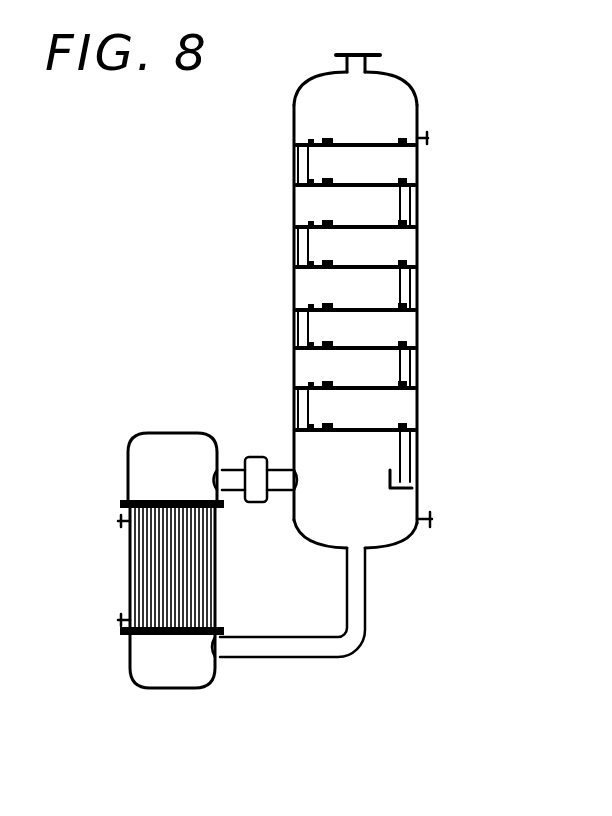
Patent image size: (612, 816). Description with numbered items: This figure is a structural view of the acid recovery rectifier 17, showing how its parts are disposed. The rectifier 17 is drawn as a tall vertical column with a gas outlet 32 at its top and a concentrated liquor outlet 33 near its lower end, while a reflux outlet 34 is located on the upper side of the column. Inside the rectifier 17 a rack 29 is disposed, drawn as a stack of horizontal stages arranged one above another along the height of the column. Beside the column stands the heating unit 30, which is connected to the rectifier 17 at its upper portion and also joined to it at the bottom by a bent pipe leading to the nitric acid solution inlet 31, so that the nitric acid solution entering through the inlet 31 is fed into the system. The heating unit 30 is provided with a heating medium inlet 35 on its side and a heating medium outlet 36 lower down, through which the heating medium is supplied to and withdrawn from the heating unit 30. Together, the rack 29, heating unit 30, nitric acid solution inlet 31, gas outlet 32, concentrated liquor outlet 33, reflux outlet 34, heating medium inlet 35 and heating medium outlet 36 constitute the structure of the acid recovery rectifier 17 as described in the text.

The acid recovery rectifier 17 is at (405, 78).
The rack 29 is at (387, 255).
The heating unit 30 is at (148, 433).
The nitric acid solution inlet 31 is at (241, 632).
The gas outlet 32 is at (356, 53).
The concentrated liquor outlet 33 is at (434, 519).
The reflux outlet 34 is at (430, 137).
The heating medium inlet 35 is at (118, 522).
The heating medium outlet 36 is at (118, 621).